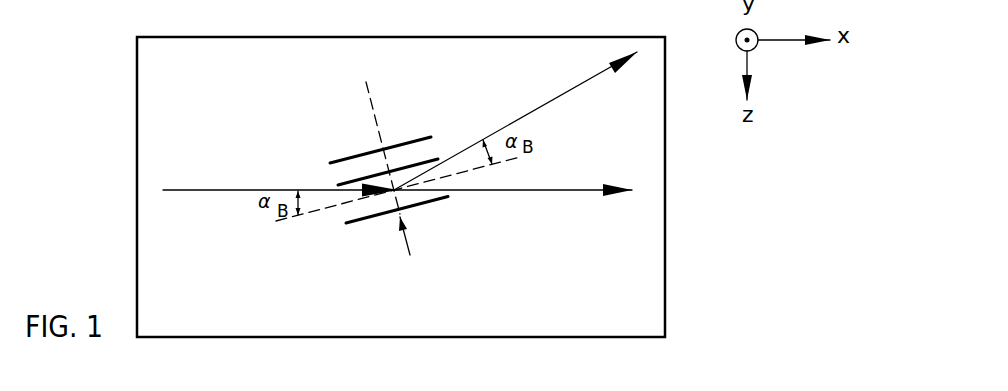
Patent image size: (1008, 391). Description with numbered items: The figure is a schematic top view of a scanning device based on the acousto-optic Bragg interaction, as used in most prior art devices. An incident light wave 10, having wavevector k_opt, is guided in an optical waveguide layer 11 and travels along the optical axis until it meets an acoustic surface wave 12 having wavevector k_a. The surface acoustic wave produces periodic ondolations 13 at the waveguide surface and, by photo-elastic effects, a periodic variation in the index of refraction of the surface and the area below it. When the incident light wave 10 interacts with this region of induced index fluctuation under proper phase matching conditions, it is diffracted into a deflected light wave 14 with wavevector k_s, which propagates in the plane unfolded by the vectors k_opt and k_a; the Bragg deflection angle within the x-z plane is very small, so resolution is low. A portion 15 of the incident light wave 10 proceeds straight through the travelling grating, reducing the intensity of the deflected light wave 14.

The incident light wave 10 is at (229, 187).
The optical waveguide layer 11 is at (160, 285).
The acoustic surface wave 12 is at (408, 247).
The periodic ondolations 13 is at (415, 138).
The deflected light wave 14 is at (520, 118).
The portion of the incident light wave 15 is at (578, 193).